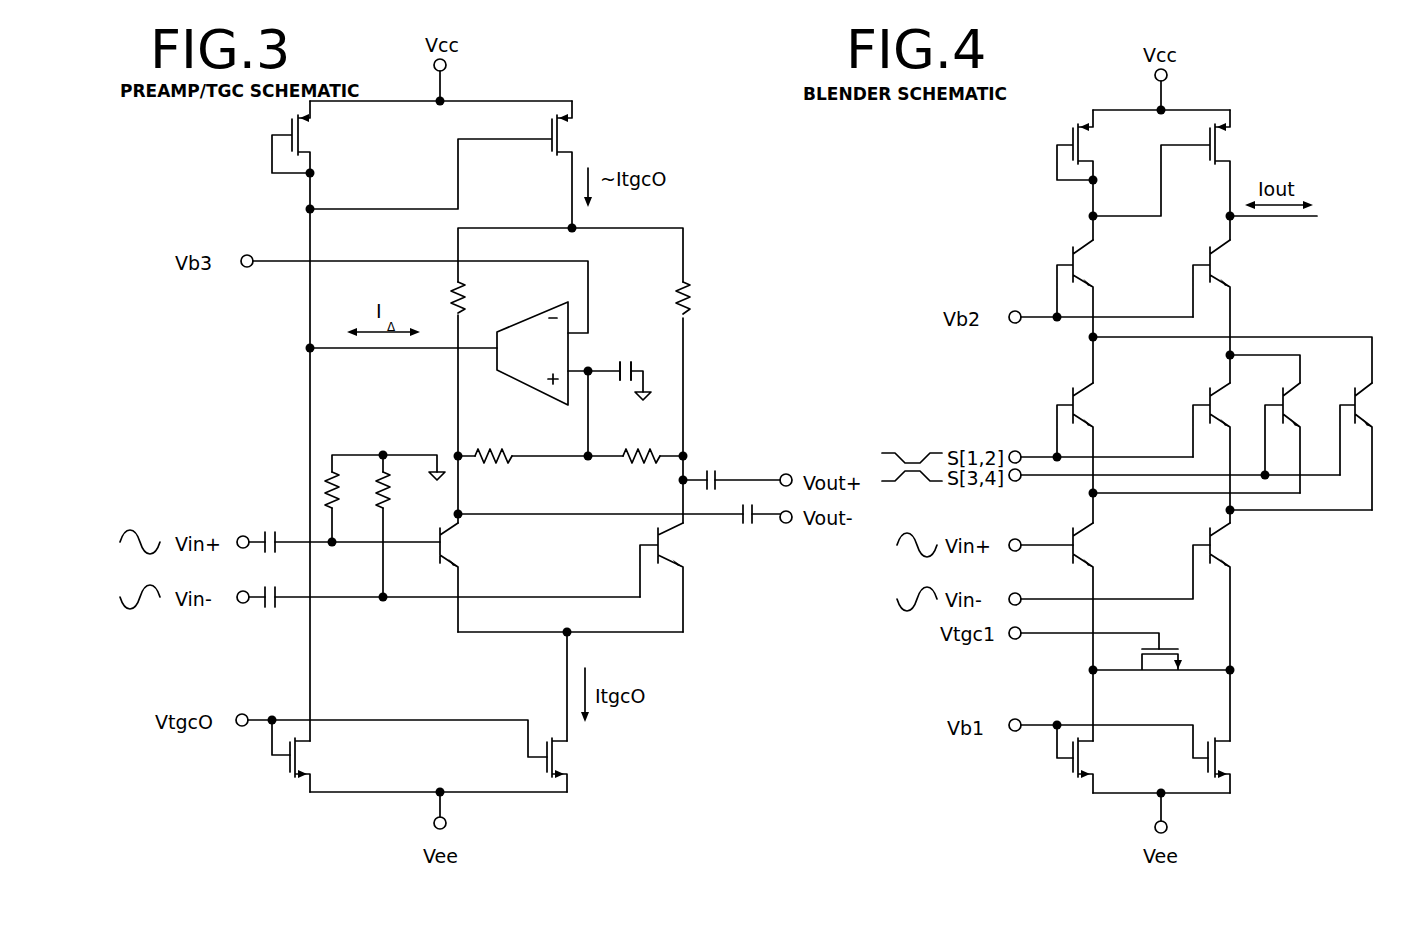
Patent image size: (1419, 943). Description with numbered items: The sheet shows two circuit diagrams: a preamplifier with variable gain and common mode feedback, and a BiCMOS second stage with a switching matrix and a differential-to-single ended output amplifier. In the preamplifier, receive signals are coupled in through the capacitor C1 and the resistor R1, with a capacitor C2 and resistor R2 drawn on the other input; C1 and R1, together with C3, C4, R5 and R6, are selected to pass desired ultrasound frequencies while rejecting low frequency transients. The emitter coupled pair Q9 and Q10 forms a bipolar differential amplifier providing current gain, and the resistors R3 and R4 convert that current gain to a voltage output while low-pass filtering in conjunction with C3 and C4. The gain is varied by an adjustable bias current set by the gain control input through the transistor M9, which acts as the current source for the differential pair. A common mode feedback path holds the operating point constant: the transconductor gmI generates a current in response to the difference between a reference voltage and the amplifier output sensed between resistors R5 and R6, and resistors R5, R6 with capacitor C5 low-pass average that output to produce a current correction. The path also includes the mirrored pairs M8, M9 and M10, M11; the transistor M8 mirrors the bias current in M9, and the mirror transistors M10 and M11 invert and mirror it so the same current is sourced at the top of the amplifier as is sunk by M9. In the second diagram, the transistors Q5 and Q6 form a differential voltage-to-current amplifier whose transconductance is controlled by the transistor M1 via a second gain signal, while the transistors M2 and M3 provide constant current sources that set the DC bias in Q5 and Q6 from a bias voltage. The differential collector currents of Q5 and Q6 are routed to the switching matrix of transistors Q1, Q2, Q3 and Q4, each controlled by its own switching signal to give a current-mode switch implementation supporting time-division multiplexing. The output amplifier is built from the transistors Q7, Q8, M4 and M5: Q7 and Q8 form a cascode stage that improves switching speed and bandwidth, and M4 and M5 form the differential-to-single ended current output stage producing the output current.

In FIG. 3, the mirrored transistor M10 is at (314, 139).
In FIG. 3, the mirrored transistor M11 is at (462, 167).
In FIG. 3, the resistor R3 is at (473, 297).
In FIG. 3, the resistor R4 is at (700, 298).
In FIG. 3, the transconductor gmI is at (532, 353).
In FIG. 3, the capacitor C5 is at (624, 359).
In FIG. 3, the resistor R5 is at (493, 443).
In FIG. 3, the resistor R6 is at (641, 443).
In FIG. 3, the capacitor C3 is at (712, 468).
In FIG. 3, the capacitor C4 is at (750, 504).
In FIG. 3, the resistor R1 is at (345, 490).
In FIG. 3, the resistor R2 is at (396, 490).
In FIG. 3, the capacitor C1 is at (270, 532).
In FIG. 3, the capacitor C2 is at (270, 587).
In FIG. 3, the emitter coupled transistor Q9 is at (463, 577).
In FIG. 3, the emitter coupled transistor Q10 is at (679, 577).
In FIG. 3, the mirror transistor M8 is at (317, 765).
In FIG. 3, the current source transistor M9 is at (573, 765).
In FIG. 4, the transistor M4 is at (1091, 175).
In FIG. 4, the transistor M5 is at (1176, 175).
In FIG. 4, the cascode transistor Q7 is at (1090, 311).
In FIG. 4, the cascode transistor Q8 is at (1226, 311).
In FIG. 4, the switching matrix transistor Q1 is at (1090, 453).
In FIG. 4, the switching matrix transistor Q2 is at (1226, 453).
In FIG. 4, the switching matrix transistor Q3 is at (1297, 438).
In FIG. 4, the switching matrix transistor Q4 is at (1372, 446).
In FIG. 4, the differential amplifier transistor Q5 is at (1098, 596).
In FIG. 4, the differential amplifier transistor Q6 is at (1235, 596).
In FIG. 4, the transconductance control transistor M1 is at (1162, 674).
In FIG. 4, the constant current source transistor M2 is at (1099, 765).
In FIG. 4, the constant current source transistor M3 is at (1235, 765).